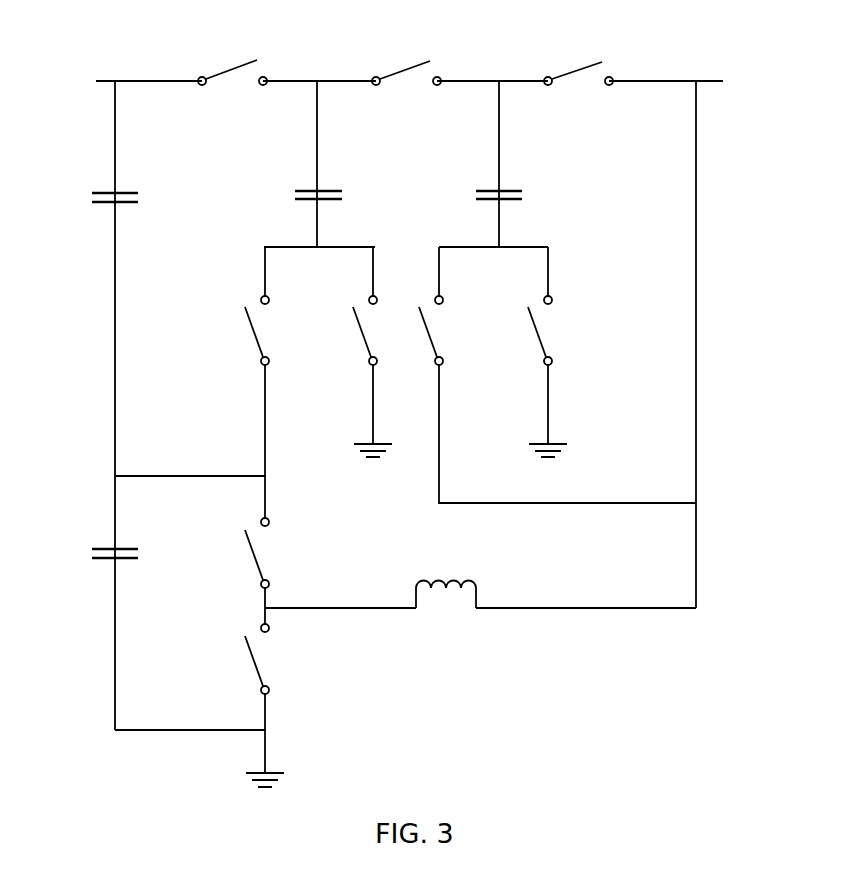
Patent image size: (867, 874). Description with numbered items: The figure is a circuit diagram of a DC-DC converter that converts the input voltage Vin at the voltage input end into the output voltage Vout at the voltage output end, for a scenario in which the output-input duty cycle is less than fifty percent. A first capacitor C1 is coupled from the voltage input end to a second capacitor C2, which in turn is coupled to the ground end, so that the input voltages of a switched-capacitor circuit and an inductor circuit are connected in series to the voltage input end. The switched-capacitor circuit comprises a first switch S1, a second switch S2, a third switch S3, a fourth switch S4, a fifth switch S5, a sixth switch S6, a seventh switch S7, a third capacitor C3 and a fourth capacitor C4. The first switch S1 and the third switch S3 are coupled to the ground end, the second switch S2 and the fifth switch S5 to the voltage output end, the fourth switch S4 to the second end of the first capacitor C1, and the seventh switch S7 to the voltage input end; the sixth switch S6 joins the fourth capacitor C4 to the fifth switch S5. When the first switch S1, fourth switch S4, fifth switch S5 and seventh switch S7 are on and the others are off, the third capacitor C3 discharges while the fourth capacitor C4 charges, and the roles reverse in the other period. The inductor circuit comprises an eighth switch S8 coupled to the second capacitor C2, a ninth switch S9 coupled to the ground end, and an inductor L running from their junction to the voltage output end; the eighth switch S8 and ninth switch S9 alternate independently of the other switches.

The first capacitor C1 is at (91, 204).
The second capacitor C2 is at (91, 555).
The third capacitor C3 is at (524, 195).
The fourth capacitor C4 is at (338, 195).
The first switch S1 is at (558, 330).
The second switch S2 is at (449, 330).
The third switch S3 is at (380, 330).
The fourth switch S4 is at (275, 330).
The fifth switch S5 is at (578, 56).
The sixth switch S6 is at (406, 56).
The seventh switch S7 is at (232, 56).
The eighth switch S8 is at (280, 553).
The ninth switch S9 is at (274, 659).
The inductor L is at (446, 578).
The input voltage Vin is at (81, 82).
The output voltage Vout is at (735, 82).